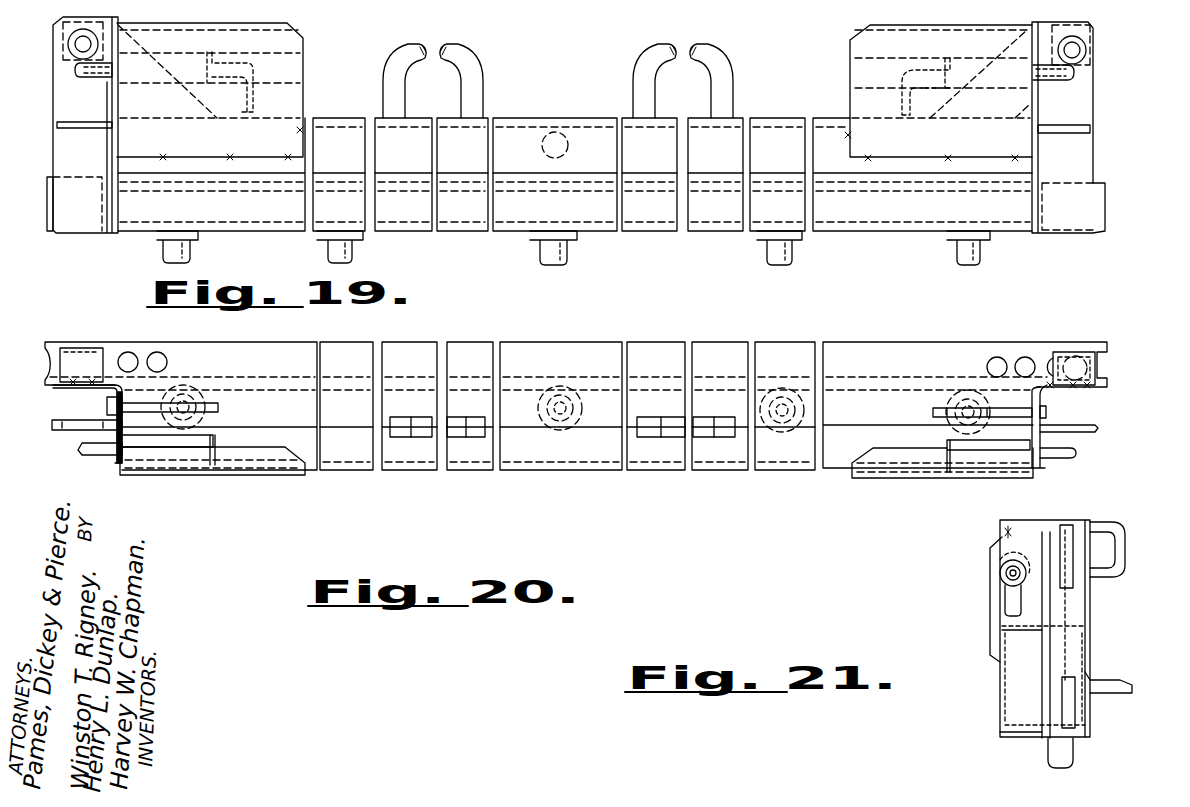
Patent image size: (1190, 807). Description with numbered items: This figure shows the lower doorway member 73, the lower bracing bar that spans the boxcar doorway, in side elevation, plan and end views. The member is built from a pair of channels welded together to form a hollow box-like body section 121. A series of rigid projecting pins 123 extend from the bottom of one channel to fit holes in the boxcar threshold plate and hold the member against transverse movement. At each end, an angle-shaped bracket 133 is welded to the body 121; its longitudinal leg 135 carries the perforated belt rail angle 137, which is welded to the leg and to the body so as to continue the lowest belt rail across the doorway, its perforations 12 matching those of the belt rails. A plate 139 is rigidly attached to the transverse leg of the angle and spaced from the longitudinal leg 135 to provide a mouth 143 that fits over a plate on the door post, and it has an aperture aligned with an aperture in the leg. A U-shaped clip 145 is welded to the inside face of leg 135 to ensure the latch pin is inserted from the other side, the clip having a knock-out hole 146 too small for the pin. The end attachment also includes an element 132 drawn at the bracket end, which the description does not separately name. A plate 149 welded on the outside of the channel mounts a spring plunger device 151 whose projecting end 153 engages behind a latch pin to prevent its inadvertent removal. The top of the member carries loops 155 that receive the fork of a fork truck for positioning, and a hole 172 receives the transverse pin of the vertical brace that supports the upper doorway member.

In FIG. 20, the perforations 12 is at (157, 352).
In FIG. 19, the lower doorway member 73 is at (527, 118).
In FIG. 20, the lower doorway member 73 is at (539, 342).
In FIG. 19, the body section 121 is at (598, 217).
In FIG. 20, the body section 121 is at (578, 466).
In FIG. 19, the projecting pins 123 is at (542, 251).
In FIG. 20, the projecting pins 123 is at (573, 430).
In FIG. 21, the projecting pins 123 is at (1060, 752).
In FIG. 20, the bracket 132 is at (1046, 386).
In FIG. 21, the bracket 132 is at (1070, 530).
In FIG. 20, the angle-shaped bracket 133 is at (1041, 465).
In FIG. 20, the longitudinal leg 135 is at (1050, 392).
In FIG. 20, the perforated belt rail angle 137 is at (594, 347).
In FIG. 21, the perforated belt rail angle 137 is at (1100, 682).
In FIG. 19, the plate 139 is at (1086, 155).
In FIG. 20, the plate 139 is at (1099, 429).
In FIG. 21, the plate 139 is at (1046, 663).
In FIG. 20, the mouth 143 is at (1078, 408).
In FIG. 19, the U-shaped clip 145 is at (1085, 50).
In FIG. 20, the U-shaped clip 145 is at (1091, 350).
In FIG. 21, the U-shaped clip 145 is at (1113, 527).
In FIG. 20, the knock-out hole 146 is at (1068, 352).
In FIG. 21, the knock-out hole 146 is at (1125, 545).
In FIG. 19, the plate 149 is at (850, 61).
In FIG. 20, the plate 149 is at (876, 473).
In FIG. 21, the plate 149 is at (992, 548).
In FIG. 19, the spring plunger device 151 is at (964, 55).
In FIG. 20, the spring plunger device 151 is at (201, 441).
In FIG. 19, the projecting end 153 is at (1068, 82).
In FIG. 20, the projecting end 153 is at (1077, 453).
In FIG. 21, the projecting end 153 is at (1006, 572).
In FIG. 19, the loops 155 is at (462, 54).
In FIG. 20, the loops 155 is at (460, 438).
In FIG. 19, the hole 172 is at (567, 133).